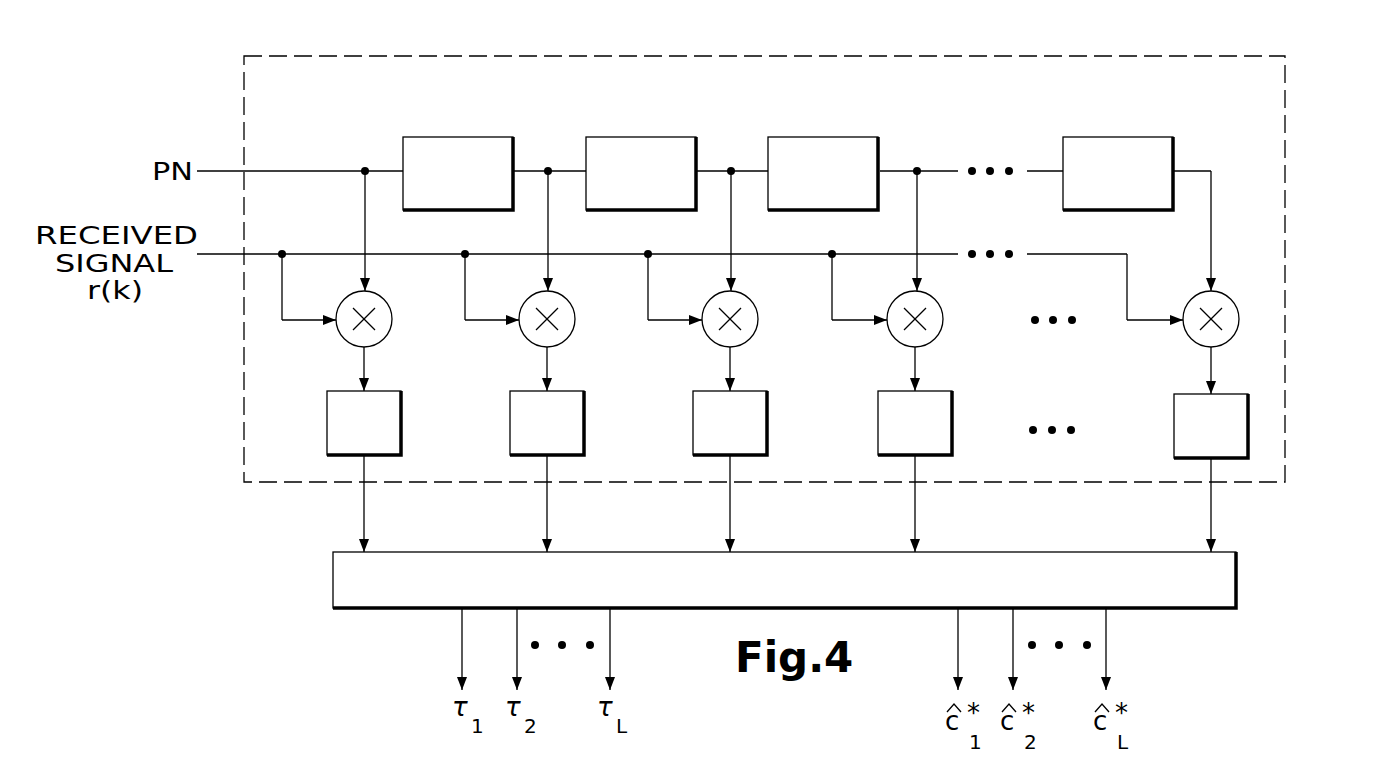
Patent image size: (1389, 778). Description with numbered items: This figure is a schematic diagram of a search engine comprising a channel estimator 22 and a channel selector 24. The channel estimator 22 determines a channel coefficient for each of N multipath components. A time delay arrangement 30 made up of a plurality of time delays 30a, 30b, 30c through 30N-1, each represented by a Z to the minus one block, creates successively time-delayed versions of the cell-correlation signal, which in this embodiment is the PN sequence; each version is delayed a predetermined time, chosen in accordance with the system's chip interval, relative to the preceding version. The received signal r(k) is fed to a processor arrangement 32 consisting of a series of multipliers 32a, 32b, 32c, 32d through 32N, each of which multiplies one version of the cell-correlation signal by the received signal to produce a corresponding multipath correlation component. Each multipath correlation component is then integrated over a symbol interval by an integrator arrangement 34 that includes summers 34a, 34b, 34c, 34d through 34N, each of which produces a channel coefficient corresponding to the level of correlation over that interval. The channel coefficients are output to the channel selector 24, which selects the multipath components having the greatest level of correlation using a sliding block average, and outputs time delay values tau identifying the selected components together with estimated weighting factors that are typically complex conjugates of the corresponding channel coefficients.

The channel estimator 22 is at (1192, 54).
The channel selector 24 is at (1240, 591).
The time delay arrangement 30 is at (872, 193).
The time delay 30a is at (462, 137).
The time delay 30b is at (645, 137).
The time delay 30c is at (829, 137).
The time delay 30N-1 is at (1101, 138).
The processor arrangement 32 is at (858, 342).
The multiplier 32a is at (392, 316).
The multiplier 32b is at (575, 316).
The multiplier 32c is at (758, 316).
The multiplier 32d is at (943, 316).
The multiplier 32N is at (1164, 334).
The integrator arrangement 34 is at (822, 471).
The integrator 34a is at (327, 405).
The integrator 34b is at (511, 405).
The integrator 34c is at (693, 405).
The integrator 34d is at (877, 405).
The integrator 34N is at (1169, 426).